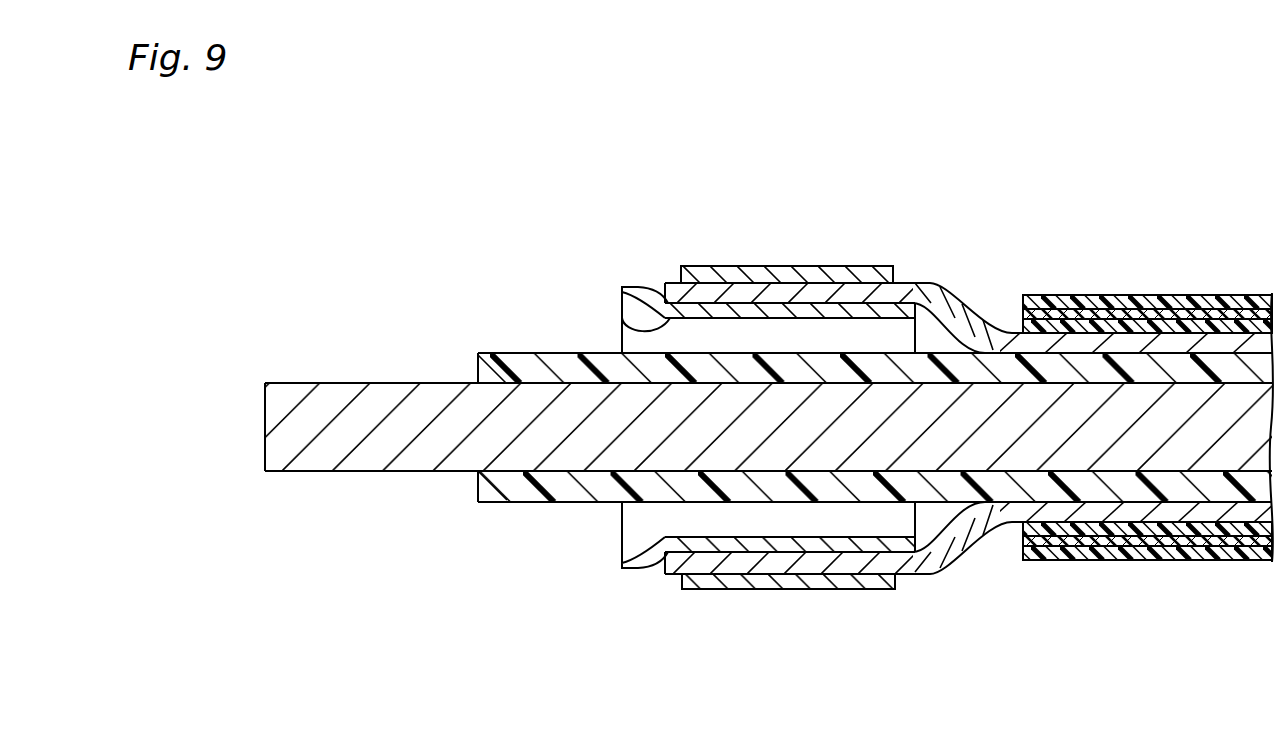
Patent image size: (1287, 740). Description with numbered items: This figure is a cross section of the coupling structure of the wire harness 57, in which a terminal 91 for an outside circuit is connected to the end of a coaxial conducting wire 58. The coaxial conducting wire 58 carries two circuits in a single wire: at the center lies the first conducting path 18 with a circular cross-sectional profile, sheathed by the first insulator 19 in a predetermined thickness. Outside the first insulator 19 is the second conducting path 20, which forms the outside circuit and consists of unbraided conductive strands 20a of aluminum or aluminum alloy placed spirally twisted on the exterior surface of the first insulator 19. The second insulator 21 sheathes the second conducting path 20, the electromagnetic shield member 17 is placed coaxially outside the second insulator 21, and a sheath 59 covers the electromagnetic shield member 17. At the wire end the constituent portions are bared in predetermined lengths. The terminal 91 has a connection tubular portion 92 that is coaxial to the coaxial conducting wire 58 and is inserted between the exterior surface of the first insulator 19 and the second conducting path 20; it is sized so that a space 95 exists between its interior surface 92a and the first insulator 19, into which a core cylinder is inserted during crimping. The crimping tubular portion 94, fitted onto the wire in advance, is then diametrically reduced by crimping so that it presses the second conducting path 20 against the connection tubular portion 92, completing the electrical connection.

The electromagnetic shield member 17 is at (1153, 316).
The first conducting path 18 is at (312, 400).
The first insulator 19 is at (517, 355).
The second conducting path 20 is at (960, 307).
The conductive strands 20a is at (947, 553).
The second insulator 21 is at (1093, 302).
The wire harness 57 is at (938, 137).
The coaxial conducting wire 58 is at (1208, 270).
The sheath 59 is at (1253, 300).
The terminal for an outside circuit 91 is at (708, 356).
The connection tubular portion 92 is at (817, 310).
The interior surface 92a is at (617, 327).
The crimping tubular portion 94 is at (872, 274).
The space 95 is at (646, 518).